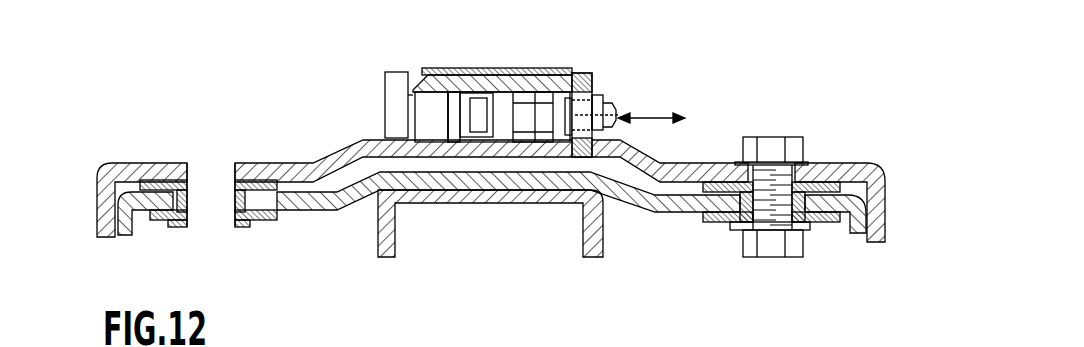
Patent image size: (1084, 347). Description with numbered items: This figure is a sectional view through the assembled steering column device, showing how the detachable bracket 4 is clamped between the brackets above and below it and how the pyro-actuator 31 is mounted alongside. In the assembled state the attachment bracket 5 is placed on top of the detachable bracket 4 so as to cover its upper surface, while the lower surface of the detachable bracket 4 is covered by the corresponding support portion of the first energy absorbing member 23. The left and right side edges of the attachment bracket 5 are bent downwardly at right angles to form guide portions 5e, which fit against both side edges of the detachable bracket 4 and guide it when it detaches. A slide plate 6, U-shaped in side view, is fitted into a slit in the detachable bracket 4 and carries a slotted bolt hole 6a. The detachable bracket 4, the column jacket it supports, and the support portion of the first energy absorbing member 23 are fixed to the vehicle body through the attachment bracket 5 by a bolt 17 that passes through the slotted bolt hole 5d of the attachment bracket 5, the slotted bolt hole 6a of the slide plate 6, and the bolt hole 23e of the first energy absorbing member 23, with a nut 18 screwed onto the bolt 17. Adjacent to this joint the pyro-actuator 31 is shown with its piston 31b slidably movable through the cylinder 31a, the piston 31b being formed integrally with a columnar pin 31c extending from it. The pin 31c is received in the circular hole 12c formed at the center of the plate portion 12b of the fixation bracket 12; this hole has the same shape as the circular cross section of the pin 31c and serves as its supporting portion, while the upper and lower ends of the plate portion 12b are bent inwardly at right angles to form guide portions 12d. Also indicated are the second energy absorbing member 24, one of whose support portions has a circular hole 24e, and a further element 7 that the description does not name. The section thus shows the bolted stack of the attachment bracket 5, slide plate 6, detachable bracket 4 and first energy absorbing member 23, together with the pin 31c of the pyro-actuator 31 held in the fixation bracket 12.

The detachable bracket 4 is at (338, 215).
The attachment bracket 5 is at (713, 163).
The slotted bolt hole 5d is at (233, 177).
The guide portion 5e is at (97, 193).
The slide plate 6 is at (158, 163).
The slotted bolt hole 6a is at (198, 197).
The bracket 7 is at (603, 245).
The fixation bracket 12 is at (435, 72).
The plate portion 12b is at (602, 88).
The circular hole 12c is at (607, 102).
The guide portion 12d is at (577, 72).
The bolt 17 is at (773, 137).
The nut 18 is at (772, 257).
The first energy absorbing member 23 is at (235, 225).
The bolt hole 23e is at (193, 227).
The second energy absorbing member 24 is at (595, 73).
The circular hole 24e is at (612, 127).
The pyro-actuator 31 is at (383, 87).
The cylinder 31a is at (535, 75).
The piston 31b is at (503, 80).
The pin 31c is at (525, 123).